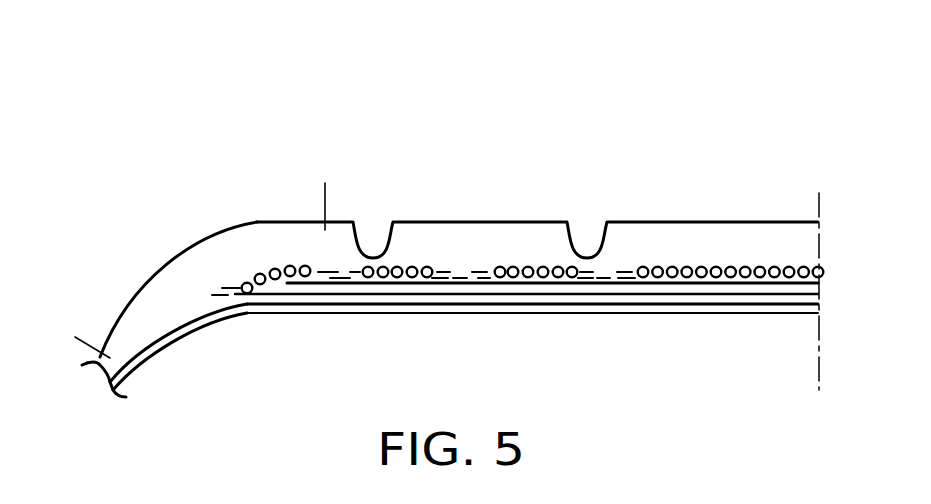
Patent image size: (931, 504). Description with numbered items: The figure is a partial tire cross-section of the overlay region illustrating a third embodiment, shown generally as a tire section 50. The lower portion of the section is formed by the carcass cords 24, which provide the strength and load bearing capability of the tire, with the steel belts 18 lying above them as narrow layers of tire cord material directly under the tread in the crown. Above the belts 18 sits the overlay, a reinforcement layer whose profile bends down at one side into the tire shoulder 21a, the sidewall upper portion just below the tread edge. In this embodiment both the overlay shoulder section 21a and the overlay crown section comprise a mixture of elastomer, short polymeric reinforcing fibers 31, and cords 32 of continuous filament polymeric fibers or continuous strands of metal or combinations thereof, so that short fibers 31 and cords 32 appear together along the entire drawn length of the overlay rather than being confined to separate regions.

The tire section 50 is at (691, 148).
The tire shoulder 21a is at (325, 175).
The short polymeric reinforcing fibers 31 is at (461, 276).
The cords 32 is at (290, 265).
The belts 18 is at (672, 285).
The carcass cords 24 is at (725, 307).